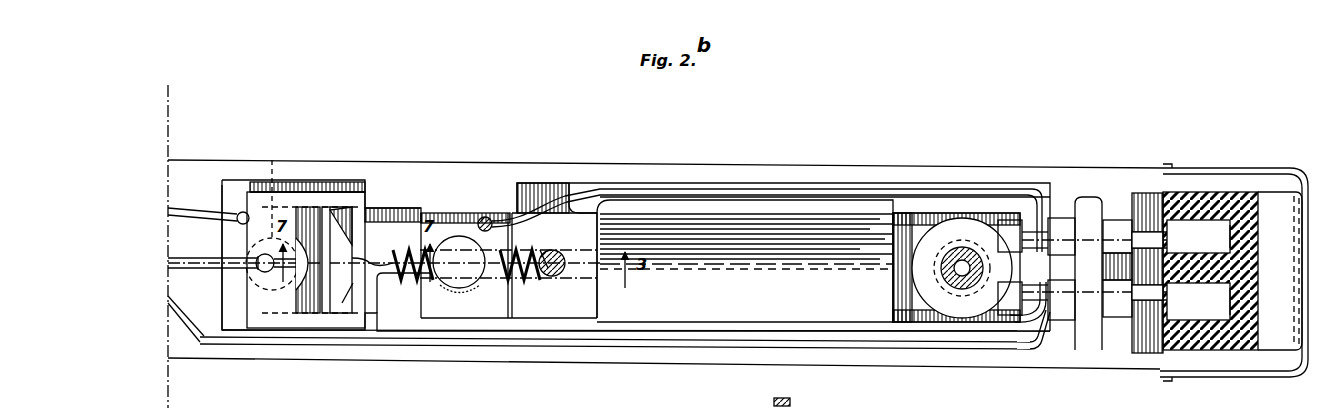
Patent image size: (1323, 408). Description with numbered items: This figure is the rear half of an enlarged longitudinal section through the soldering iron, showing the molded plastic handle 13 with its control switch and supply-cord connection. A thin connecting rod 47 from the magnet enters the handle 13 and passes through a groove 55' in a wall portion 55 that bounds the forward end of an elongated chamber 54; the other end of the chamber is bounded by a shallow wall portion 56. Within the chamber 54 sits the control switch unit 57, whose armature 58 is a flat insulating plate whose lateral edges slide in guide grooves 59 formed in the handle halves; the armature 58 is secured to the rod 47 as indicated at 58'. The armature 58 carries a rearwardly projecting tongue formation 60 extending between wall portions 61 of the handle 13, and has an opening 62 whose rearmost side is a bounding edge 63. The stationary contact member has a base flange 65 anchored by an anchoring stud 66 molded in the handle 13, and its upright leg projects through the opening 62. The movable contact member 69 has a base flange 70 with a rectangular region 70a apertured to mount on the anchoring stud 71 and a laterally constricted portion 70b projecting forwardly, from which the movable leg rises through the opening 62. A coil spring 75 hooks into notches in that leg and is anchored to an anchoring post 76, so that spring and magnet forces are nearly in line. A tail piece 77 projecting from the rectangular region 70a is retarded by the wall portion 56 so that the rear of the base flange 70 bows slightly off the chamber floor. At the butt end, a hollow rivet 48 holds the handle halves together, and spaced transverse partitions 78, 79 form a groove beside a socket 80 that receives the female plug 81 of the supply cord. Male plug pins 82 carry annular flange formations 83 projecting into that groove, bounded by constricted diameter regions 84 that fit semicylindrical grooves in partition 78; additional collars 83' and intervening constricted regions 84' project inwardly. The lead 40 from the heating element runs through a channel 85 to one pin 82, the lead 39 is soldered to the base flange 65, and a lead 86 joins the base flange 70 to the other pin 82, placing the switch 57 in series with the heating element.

The handle 13 is at (601, 182).
The lead 39 is at (177, 208).
The lead 40 is at (638, 350).
The connecting rod 47 is at (230, 257).
The hollow rivet 48 is at (948, 258).
The elongated chamber 54 is at (306, 182).
The wall portion 55 is at (222, 232).
The groove 55' is at (213, 247).
The shallow wall portion 56 is at (530, 318).
The control switch unit 57 is at (360, 222).
The armature 58 is at (310, 162).
The securing point 58' is at (262, 280).
The guide grooves 59 is at (235, 184).
The tongue formation 60 is at (386, 306).
The wall portions 61 is at (404, 204).
The opening 62 is at (310, 312).
The bounding edge 63 is at (358, 272).
The base flange 65 is at (226, 305).
The anchoring stud 66 is at (272, 214).
The movable contact member 69 is at (448, 302).
The base flange 70 is at (498, 302).
The rectangular region 70a is at (472, 214).
The constricted portion 70b is at (409, 251).
The anchoring stud 71 is at (460, 244).
The coil spring 75 is at (544, 252).
The anchoring post 76 is at (560, 254).
The tail piece 77 is at (520, 252).
The partition 78 is at (1150, 332).
The partition 79 is at (1090, 336).
The socket 80 is at (1225, 192).
The female plug 81 is at (1274, 205).
The male plug pins 82 is at (1238, 246).
The annular flange formations 83 is at (1128, 266).
The additional collars 83' is at (1048, 267).
The constricted diameter regions 84 is at (1126, 268).
The constricted regions 84' is at (1015, 278).
The channel 85 is at (690, 346).
The lead 86 is at (752, 189).